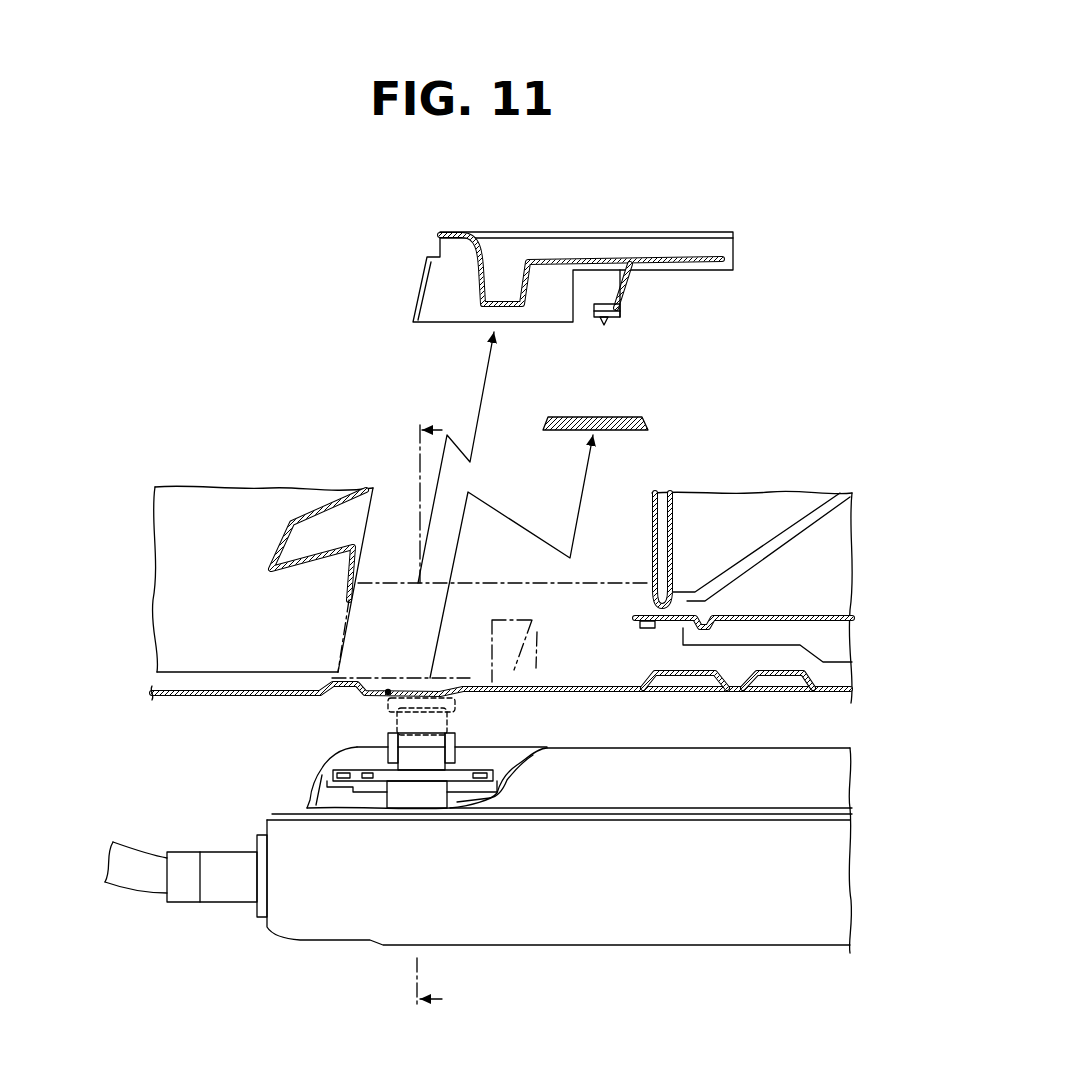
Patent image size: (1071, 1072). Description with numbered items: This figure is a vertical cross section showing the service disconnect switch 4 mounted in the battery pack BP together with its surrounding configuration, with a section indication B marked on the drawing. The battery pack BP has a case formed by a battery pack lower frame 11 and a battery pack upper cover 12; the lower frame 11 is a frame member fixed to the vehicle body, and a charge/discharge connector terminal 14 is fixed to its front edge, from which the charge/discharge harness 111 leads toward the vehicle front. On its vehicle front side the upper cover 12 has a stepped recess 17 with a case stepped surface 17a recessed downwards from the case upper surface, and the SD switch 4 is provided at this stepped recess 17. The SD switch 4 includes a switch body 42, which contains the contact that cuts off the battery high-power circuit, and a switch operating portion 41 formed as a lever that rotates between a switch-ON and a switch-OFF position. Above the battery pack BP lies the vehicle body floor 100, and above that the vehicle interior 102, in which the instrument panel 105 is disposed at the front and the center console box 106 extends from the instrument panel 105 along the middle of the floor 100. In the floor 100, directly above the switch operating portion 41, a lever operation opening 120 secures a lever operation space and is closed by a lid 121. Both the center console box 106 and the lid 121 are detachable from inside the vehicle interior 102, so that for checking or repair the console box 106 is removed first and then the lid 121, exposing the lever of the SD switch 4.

The center console box 106 is at (678, 232).
The vehicle interior 102 is at (736, 376).
The lid 121 is at (613, 417).
The instrument panel 105 is at (373, 507).
The lever operation opening 120 is at (388, 690).
The service disconnect switch 4 is at (410, 736).
The switch body 42 is at (413, 752).
The switch operating portion 41 is at (448, 745).
The stepped recess 17 is at (562, 760).
The case stepped surface 17a is at (322, 775).
The vehicle body floor 100 is at (570, 693).
The battery pack upper cover 12 is at (675, 762).
The charge/discharge harness 111 is at (123, 888).
The charge/discharge connector terminal 14 is at (225, 902).
The battery pack lower frame 11 is at (340, 930).
The battery pack BP is at (575, 950).
The section line B is at (425, 717).